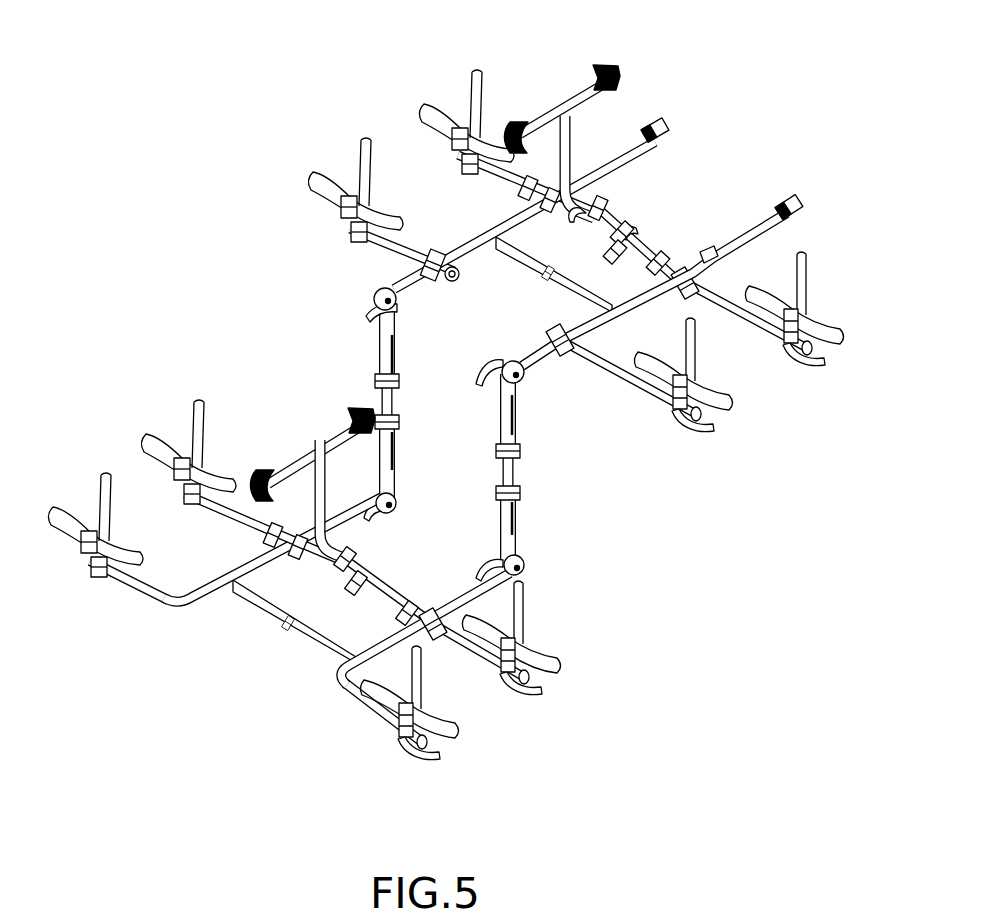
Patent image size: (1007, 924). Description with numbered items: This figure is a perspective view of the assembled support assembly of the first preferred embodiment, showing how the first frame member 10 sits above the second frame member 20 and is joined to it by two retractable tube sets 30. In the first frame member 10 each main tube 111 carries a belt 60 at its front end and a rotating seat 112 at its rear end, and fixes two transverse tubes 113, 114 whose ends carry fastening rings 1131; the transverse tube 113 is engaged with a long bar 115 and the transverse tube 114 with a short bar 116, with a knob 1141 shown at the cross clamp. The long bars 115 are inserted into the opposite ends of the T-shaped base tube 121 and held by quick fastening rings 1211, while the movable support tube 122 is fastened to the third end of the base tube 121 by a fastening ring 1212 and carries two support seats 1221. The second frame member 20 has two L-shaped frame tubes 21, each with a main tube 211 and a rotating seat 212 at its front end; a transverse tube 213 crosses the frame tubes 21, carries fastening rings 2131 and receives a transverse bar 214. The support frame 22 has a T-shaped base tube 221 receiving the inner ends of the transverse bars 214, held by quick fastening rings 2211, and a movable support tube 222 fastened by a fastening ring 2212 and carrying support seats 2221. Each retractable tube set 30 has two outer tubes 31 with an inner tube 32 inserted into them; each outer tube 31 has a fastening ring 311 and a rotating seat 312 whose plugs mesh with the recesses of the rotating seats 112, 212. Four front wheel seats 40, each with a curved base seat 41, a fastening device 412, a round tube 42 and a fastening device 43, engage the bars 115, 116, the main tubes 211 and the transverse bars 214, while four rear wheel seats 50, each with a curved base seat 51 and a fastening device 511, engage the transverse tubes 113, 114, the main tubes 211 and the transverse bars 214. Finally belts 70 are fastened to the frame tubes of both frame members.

The first frame member 10 is at (557, 210).
The main tube 111 is at (467, 250).
The rotating seat 112 is at (525, 376).
The transverse tube 113 is at (541, 186).
The fastening ring 1131 is at (583, 230).
The transverse tube 114 is at (431, 252).
The knob of cross clamp 1141 is at (424, 249).
The long bar 115 is at (647, 252).
The short bar 116 is at (383, 240).
The base tube 121 is at (619, 226).
The quick fastening ring 1211 is at (618, 262).
The fastening ring 1212 is at (606, 201).
The movable support tube 122 is at (579, 112).
The support seat 1221 is at (604, 65).
The second frame member 20 is at (335, 546).
The L-shaped frame tube 21 is at (335, 617).
The main tube 211 is at (145, 586).
The rotating seat 212 is at (527, 568).
The transverse tube 213 is at (268, 525).
The fastening ring 2131 is at (265, 548).
The transverse bar 214 is at (226, 508).
The support frame 22 is at (394, 513).
The base tube 221 is at (394, 603).
The quick fastening ring 2211 is at (352, 592).
The fastening ring 2212 is at (333, 568).
The movable support tube 222 is at (321, 454).
The support seat 2221 is at (350, 412).
The retractable tube set 30 is at (458, 440).
The outer tube 31 is at (500, 405).
The inner tube 32 is at (514, 470).
The fastening ring 311 is at (525, 450).
The rotating seat 312 is at (496, 350).
The front wheel seat 40 is at (612, 487).
The curved base seat 41 is at (805, 303).
The fastening device 412 is at (788, 286).
The round tube 42 is at (779, 363).
The fastening device 43 is at (800, 378).
The rear wheel seat 50 is at (292, 305).
The curved base seat 51 is at (457, 98).
The fastening device 511 is at (431, 149).
The belt 60 is at (655, 118).
The belt 70 is at (546, 280).